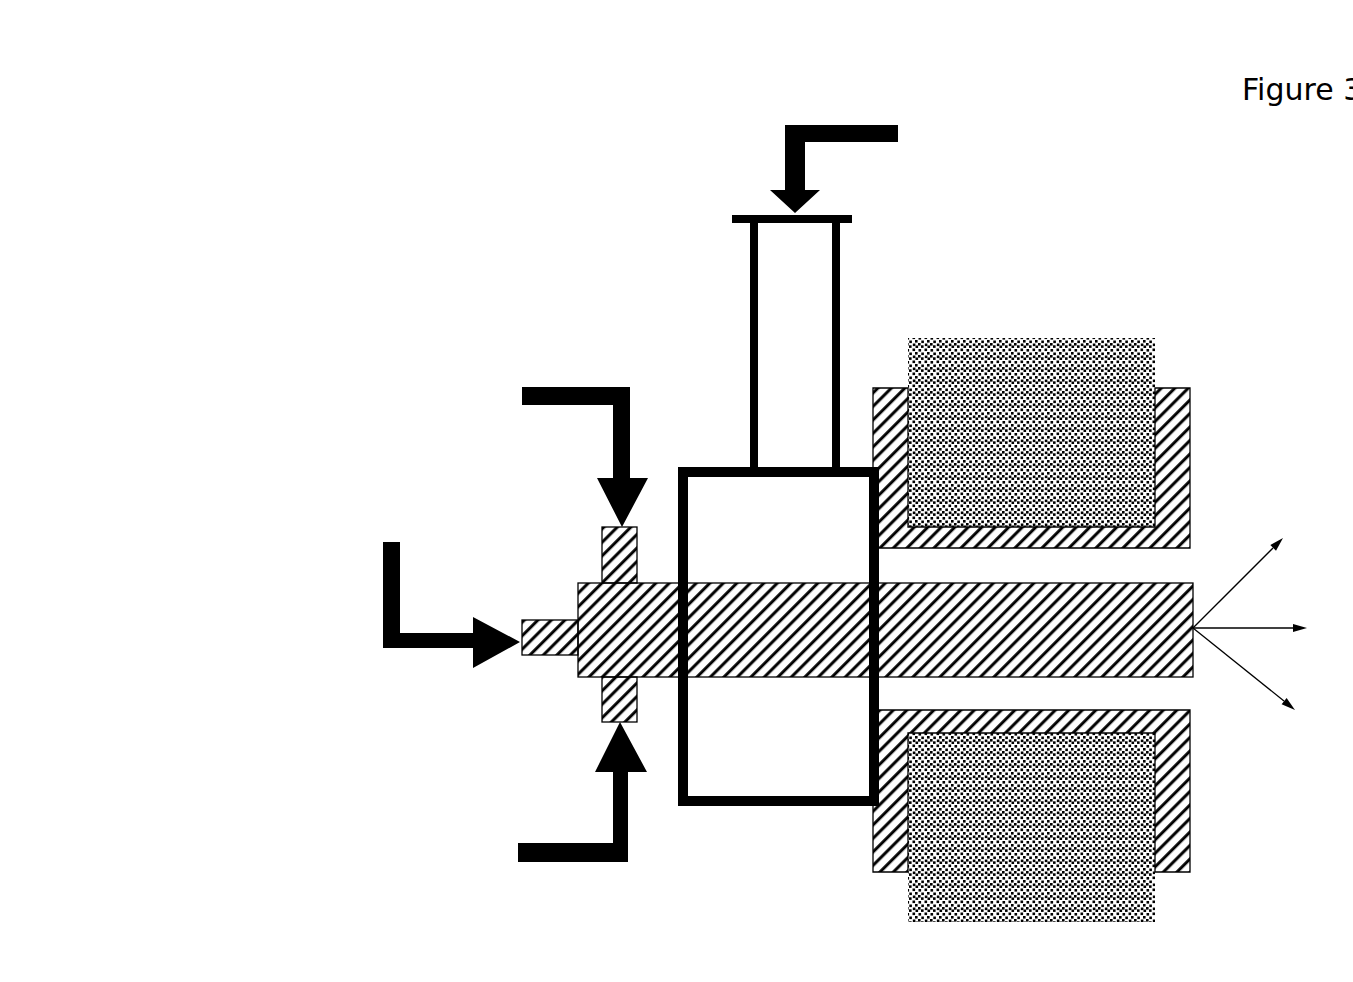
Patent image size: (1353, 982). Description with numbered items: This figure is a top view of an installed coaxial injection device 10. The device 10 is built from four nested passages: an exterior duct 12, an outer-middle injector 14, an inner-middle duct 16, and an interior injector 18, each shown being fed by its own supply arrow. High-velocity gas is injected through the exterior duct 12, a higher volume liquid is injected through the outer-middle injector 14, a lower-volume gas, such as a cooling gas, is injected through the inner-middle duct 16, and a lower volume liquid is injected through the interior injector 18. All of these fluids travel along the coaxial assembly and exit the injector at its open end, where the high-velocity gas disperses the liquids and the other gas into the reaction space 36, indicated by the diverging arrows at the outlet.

The coaxial injection device 10 is at (298, 125).
The exterior duct 12 is at (853, 169).
The outer-middle injector 14 is at (569, 457).
The inner-middle duct 16 is at (451, 593).
The interior injector 18 is at (563, 794).
The reaction space 36 is at (1262, 624).